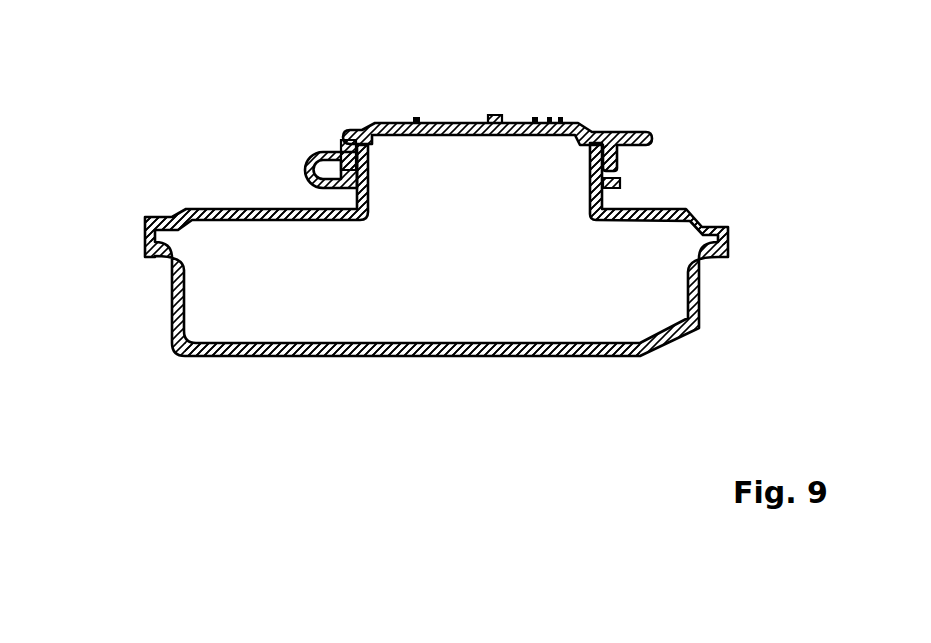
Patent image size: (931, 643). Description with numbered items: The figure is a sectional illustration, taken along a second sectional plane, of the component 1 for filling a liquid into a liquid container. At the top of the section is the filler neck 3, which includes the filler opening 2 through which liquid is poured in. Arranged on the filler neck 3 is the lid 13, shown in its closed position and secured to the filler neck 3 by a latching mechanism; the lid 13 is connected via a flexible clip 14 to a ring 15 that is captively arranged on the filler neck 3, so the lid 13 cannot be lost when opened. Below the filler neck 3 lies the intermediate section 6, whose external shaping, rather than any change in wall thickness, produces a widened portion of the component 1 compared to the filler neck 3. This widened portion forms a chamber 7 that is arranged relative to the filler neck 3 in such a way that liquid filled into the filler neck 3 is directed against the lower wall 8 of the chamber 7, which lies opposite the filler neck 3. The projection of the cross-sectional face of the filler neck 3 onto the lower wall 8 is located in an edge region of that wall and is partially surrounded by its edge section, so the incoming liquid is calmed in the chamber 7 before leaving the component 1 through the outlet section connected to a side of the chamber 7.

The component 1 is at (463, 246).
The filler opening 2 is at (508, 182).
The filler neck 3 is at (600, 200).
The intermediate section 6 is at (227, 358).
The chamber 7 is at (208, 207).
The lower wall 8 is at (518, 358).
The lid 13 is at (452, 122).
The flexible clip 14 is at (303, 171).
The ring 15 is at (616, 173).